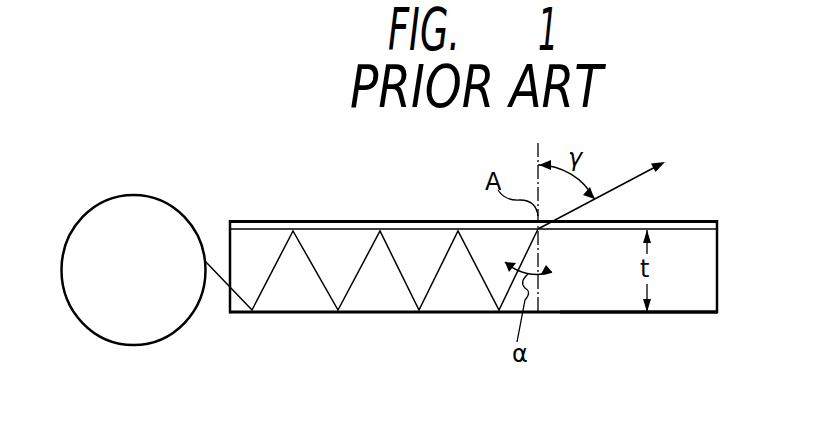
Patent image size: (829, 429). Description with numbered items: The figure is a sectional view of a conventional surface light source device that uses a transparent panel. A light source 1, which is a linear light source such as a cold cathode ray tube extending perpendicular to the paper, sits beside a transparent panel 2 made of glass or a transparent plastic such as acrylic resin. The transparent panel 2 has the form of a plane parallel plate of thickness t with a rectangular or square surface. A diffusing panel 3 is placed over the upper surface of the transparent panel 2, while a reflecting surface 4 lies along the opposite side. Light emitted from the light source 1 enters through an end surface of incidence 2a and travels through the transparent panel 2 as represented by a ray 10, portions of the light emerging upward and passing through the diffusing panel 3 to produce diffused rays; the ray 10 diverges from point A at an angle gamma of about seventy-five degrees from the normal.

The light source 1 is at (105, 322).
The transparent panel 2 is at (708, 272).
The end surface of incidence 2a is at (230, 307).
The diffusing panel 3 is at (688, 225).
The reflecting surface 4 is at (667, 313).
The ray 10 is at (355, 283).